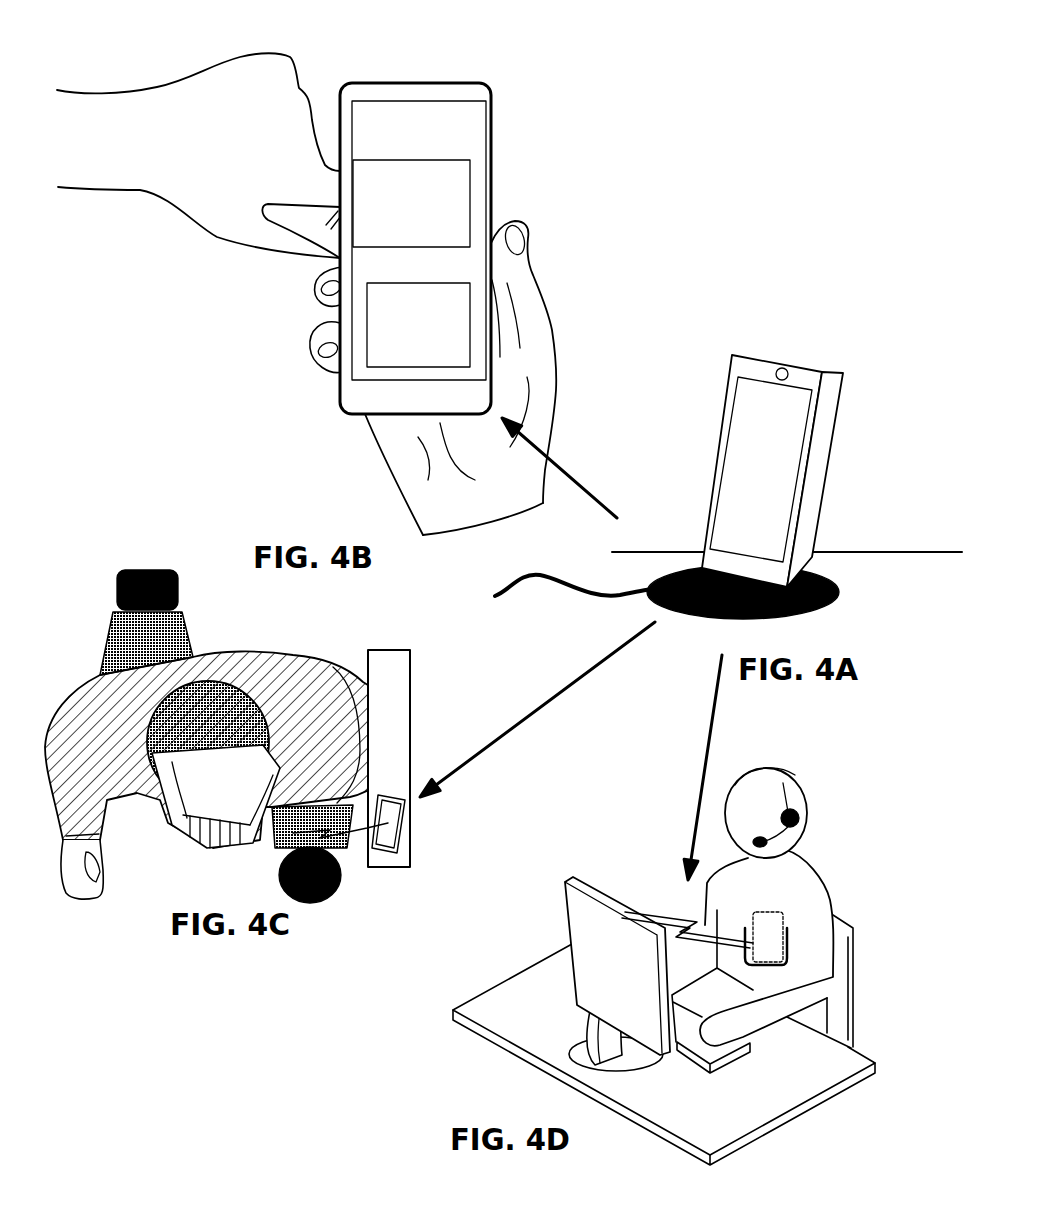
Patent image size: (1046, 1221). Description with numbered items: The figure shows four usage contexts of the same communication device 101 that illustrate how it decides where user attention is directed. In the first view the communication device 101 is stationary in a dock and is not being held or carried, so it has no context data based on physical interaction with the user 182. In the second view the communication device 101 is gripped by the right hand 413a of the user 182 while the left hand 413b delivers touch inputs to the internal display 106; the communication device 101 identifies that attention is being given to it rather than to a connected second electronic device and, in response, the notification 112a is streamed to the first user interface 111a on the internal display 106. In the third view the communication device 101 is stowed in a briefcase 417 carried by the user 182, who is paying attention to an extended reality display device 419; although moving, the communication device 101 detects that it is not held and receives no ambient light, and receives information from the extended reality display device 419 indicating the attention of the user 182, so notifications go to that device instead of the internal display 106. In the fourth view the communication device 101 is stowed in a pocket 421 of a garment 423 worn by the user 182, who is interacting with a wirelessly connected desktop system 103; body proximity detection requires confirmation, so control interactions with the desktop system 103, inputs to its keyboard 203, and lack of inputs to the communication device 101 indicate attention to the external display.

In FIG. 4B, the communication device 101 is at (448, 224).
In FIG. 4A, the communication device 101 is at (812, 368).
In FIG. 4C, the communication device 101 is at (396, 843).
In FIG. 4D, the communication device 101 is at (786, 938).
In FIG. 4D, the desktop system 103 is at (567, 878).
In FIG. 4B, the internal display 106 is at (345, 91).
In FIG. 4C, the internal display 106 is at (397, 855).
In FIG. 4B, the first user interface 111a is at (411, 177).
In FIG. 4B, the notification 112a is at (418, 325).
In FIG. 4B, the user 182 is at (138, 74).
In FIG. 4C, the user 182 is at (224, 736).
In FIG. 4D, the user 182 is at (805, 863).
In FIG. 4A, the keyboard 203 is at (832, 580).
In FIG. 4B, the right hand 413a is at (545, 312).
In FIG. 4B, the left hand 413b is at (222, 240).
In FIG. 4C, the briefcase 417 is at (411, 683).
In FIG. 4C, the extended reality display device 419 is at (172, 825).
In FIG. 4D, the pocket 421 is at (735, 930).
In FIG. 4D, the garment 423 is at (778, 1030).